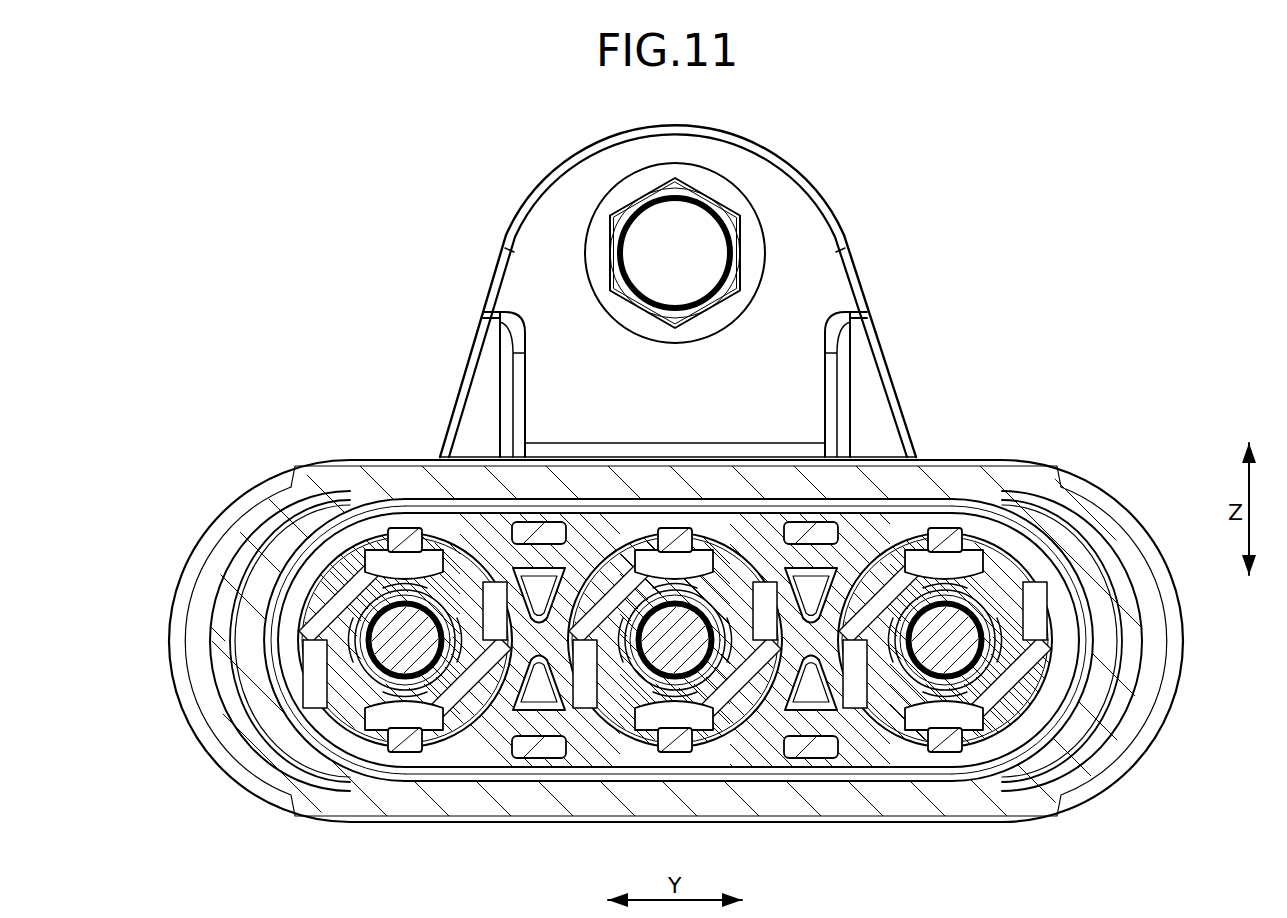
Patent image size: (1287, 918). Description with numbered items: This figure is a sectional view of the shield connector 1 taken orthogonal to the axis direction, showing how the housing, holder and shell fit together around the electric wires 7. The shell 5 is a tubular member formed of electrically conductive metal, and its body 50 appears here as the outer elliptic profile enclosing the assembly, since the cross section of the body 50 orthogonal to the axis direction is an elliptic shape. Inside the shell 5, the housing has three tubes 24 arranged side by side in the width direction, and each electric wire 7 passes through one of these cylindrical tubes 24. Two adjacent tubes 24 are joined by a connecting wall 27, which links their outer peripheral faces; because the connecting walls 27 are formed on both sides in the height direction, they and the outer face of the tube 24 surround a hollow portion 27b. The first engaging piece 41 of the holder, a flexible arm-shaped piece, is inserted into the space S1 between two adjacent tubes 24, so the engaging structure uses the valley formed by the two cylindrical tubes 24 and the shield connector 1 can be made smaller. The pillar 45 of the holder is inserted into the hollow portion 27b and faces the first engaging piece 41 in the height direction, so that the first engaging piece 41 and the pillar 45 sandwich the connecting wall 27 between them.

The shield connector 1 is at (1042, 200).
The shell 5 is at (853, 250).
The tube 24 is at (597, 527).
The first engaging piece 41 is at (502, 517).
The space S1 is at (473, 517).
The body 50 is at (972, 483).
The connecting wall 27 is at (293, 483).
The pillar 45 is at (300, 537).
The hollow portion 27b is at (325, 565).
The electric wire 7 is at (390, 627).